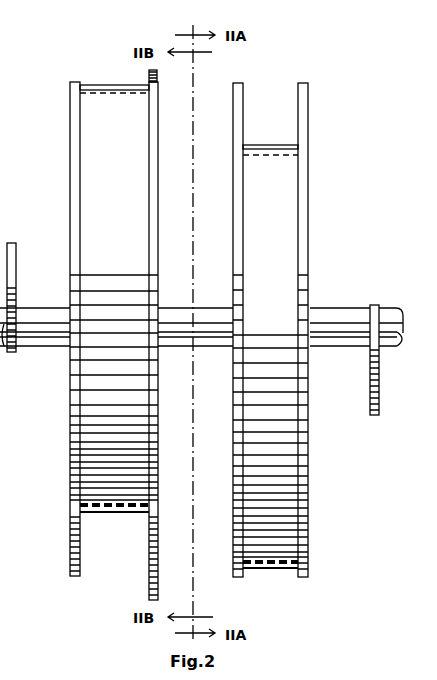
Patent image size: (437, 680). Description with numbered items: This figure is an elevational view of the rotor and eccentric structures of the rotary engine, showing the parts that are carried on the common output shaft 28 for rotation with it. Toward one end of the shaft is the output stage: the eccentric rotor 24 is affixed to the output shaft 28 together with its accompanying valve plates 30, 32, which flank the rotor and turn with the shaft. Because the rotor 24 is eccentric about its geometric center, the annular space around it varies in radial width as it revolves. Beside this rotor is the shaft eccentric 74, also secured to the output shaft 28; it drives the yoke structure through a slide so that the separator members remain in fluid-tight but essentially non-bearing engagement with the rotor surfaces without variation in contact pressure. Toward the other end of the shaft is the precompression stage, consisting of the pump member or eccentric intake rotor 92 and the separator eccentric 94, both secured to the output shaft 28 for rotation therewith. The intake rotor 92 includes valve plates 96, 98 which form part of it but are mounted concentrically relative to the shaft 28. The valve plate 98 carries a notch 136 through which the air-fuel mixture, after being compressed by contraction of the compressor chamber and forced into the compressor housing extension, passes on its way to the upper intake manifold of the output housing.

The eccentric rotor 24 is at (278, 175).
The output shaft 28 is at (325, 308).
The valve plate 30 is at (240, 83).
The valve plate 32 is at (305, 90).
The shaft eccentric 74 is at (380, 400).
The eccentric rotor 92 is at (105, 107).
The separator eccentric 94 is at (12, 243).
The valve plate 96 is at (76, 118).
The valve plate 98 is at (152, 128).
The notch 136 is at (158, 80).